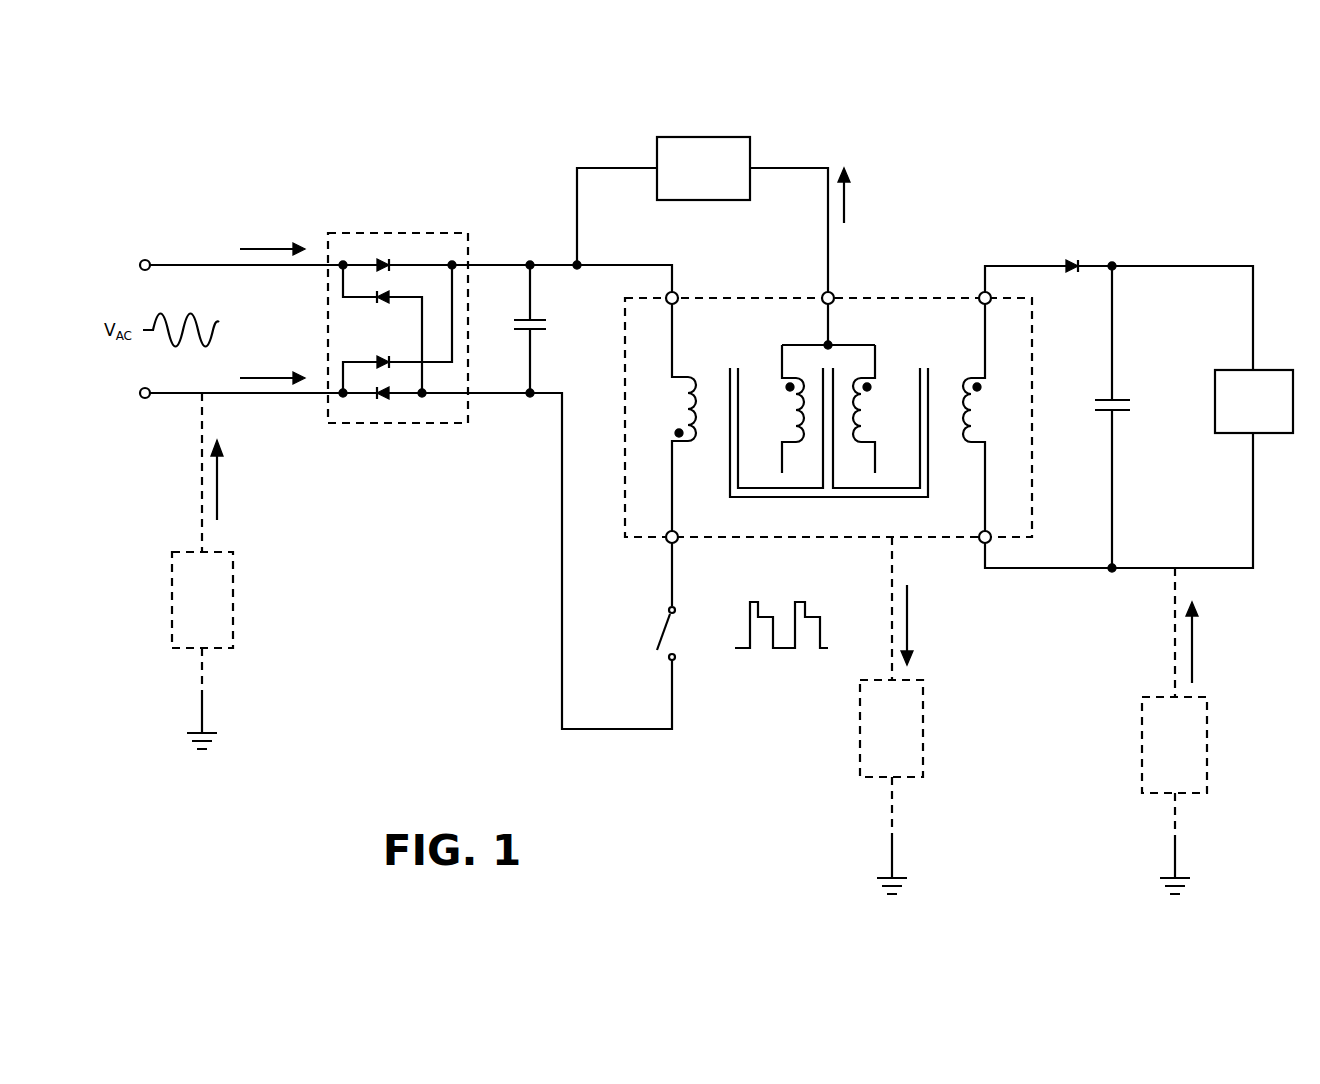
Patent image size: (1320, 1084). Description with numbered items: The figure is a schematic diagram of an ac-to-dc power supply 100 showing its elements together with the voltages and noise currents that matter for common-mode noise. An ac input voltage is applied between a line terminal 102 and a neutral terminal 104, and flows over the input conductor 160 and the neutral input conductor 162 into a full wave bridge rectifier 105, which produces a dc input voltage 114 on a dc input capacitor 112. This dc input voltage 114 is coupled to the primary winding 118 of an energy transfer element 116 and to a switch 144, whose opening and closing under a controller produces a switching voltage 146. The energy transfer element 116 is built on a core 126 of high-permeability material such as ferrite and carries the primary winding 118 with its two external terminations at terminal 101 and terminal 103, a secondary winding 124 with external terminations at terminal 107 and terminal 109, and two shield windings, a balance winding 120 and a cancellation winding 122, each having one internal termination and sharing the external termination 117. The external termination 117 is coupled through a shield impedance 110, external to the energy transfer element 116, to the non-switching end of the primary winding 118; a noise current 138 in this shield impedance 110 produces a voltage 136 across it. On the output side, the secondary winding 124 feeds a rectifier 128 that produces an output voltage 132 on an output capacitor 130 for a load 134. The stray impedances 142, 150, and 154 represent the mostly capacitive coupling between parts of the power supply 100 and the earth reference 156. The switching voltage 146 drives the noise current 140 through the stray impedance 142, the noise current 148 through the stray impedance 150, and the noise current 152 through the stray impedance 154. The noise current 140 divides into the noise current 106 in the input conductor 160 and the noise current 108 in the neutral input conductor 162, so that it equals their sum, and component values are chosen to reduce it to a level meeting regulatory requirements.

The power supply 100 is at (686, 492).
The terminal 101 is at (678, 283).
The line terminal 102 is at (141, 246).
The terminal 103 is at (666, 526).
The neutral terminal 104 is at (142, 410).
The full wave bridge rectifier 105 is at (390, 232).
The noise current I_CML 106 is at (288, 230).
The terminal 107 is at (978, 286).
The noise current I_CMN 108 is at (288, 360).
The terminal 109 is at (988, 526).
The shield impedance Z_SHIELD 110 is at (702, 214).
The dc input capacitor 112 is at (520, 316).
The dc input voltage V_DC 114 is at (576, 312).
The energy transfer element 116 is at (763, 286).
The external termination 117 is at (840, 294).
The primary winding 118 is at (678, 450).
The balance winding 120 is at (778, 384).
The cancellation winding 122 is at (882, 384).
The secondary winding 124 is at (977, 450).
The core 126 is at (815, 498).
The rectifier 128 is at (1064, 243).
The output capacitor 130 is at (1094, 420).
The output voltage V_O 132 is at (1154, 390).
The load 134 is at (1254, 401).
The voltage V_ZSH 136 is at (732, 100).
The noise current I_SHIELD 138 is at (858, 188).
The noise current I_CM 140 is at (228, 448).
The stray impedance Z_PE 142 is at (202, 621).
The switch S1 144 is at (646, 616).
The switching voltage V_S1 146 is at (707, 612).
The noise current I_TE 148 is at (916, 612).
The stray impedance Z_TE 150 is at (891, 688).
The noise current I_SE 152 is at (1202, 628).
The stray impedance Z_SE 154 is at (1174, 702).
The earth reference 156 is at (225, 742).
The input conductor 160 is at (212, 261).
The neutral input conductor 162 is at (212, 391).